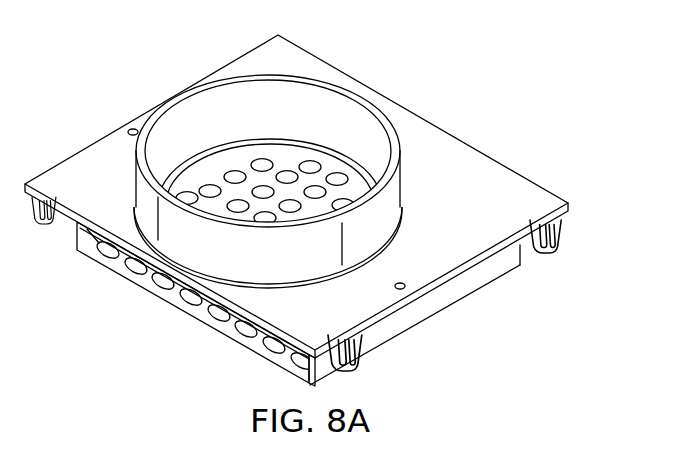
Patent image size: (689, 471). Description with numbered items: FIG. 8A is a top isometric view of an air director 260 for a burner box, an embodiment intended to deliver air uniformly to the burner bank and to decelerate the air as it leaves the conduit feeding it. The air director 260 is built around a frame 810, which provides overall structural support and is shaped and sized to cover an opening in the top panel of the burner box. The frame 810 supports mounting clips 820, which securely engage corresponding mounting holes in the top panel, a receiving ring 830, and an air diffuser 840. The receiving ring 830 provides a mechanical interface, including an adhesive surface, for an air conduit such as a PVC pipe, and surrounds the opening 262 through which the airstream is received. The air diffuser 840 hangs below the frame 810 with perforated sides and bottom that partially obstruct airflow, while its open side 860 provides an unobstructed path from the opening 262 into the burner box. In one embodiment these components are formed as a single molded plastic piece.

The air director 260 is at (101, 138).
The opening 262 is at (179, 106).
The frame 810 is at (483, 167).
The mounting clips 820 is at (563, 230).
The receiving ring 830 is at (227, 82).
The air diffuser 840 is at (438, 297).
The open side 860 is at (190, 328).